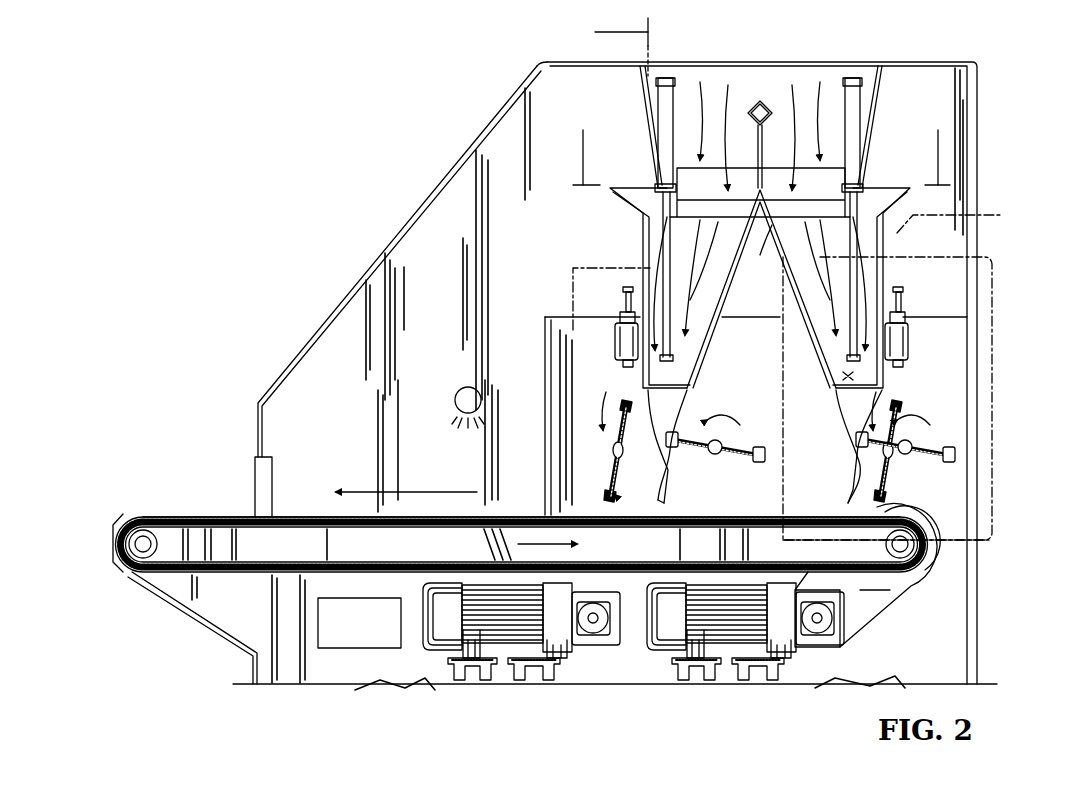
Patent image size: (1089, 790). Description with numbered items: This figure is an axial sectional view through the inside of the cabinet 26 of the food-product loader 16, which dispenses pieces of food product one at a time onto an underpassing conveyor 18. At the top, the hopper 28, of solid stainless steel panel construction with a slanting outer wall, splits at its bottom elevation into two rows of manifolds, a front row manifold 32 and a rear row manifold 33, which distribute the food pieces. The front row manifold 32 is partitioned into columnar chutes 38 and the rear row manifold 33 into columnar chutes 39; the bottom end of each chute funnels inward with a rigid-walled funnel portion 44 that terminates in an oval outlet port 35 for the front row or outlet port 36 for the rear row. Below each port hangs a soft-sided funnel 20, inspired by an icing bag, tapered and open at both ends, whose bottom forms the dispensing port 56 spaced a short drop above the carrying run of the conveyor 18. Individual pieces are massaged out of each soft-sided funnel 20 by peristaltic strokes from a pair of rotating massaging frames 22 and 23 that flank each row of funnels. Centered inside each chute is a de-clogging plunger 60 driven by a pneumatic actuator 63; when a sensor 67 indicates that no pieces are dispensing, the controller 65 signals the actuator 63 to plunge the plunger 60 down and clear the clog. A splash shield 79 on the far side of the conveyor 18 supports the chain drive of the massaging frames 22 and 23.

The food-product loader 16 is at (281, 266).
The conveyor 18 is at (229, 516).
The soft-sided funnel 20 is at (920, 497).
The massaging frame 22 is at (615, 400).
The massaging frame 23 is at (758, 465).
The cabinet 26 is at (402, 230).
The hopper 28 is at (647, 97).
The front row manifold 32 is at (641, 238).
The rear row manifold 33 is at (785, 250).
The outlet port 35 is at (700, 380).
The outlet port 36 is at (880, 392).
The columnar chute 38 is at (871, 288).
The columnar chute 39 is at (885, 268).
The funnel portion 44 is at (850, 377).
The dispensing port 56 is at (667, 487).
The de-clogging plunger 60 is at (684, 296).
The pneumatic actuator 63 is at (658, 152).
The controller 65 is at (362, 649).
The sensor 67 is at (460, 403).
The splash shield 79 is at (548, 318).